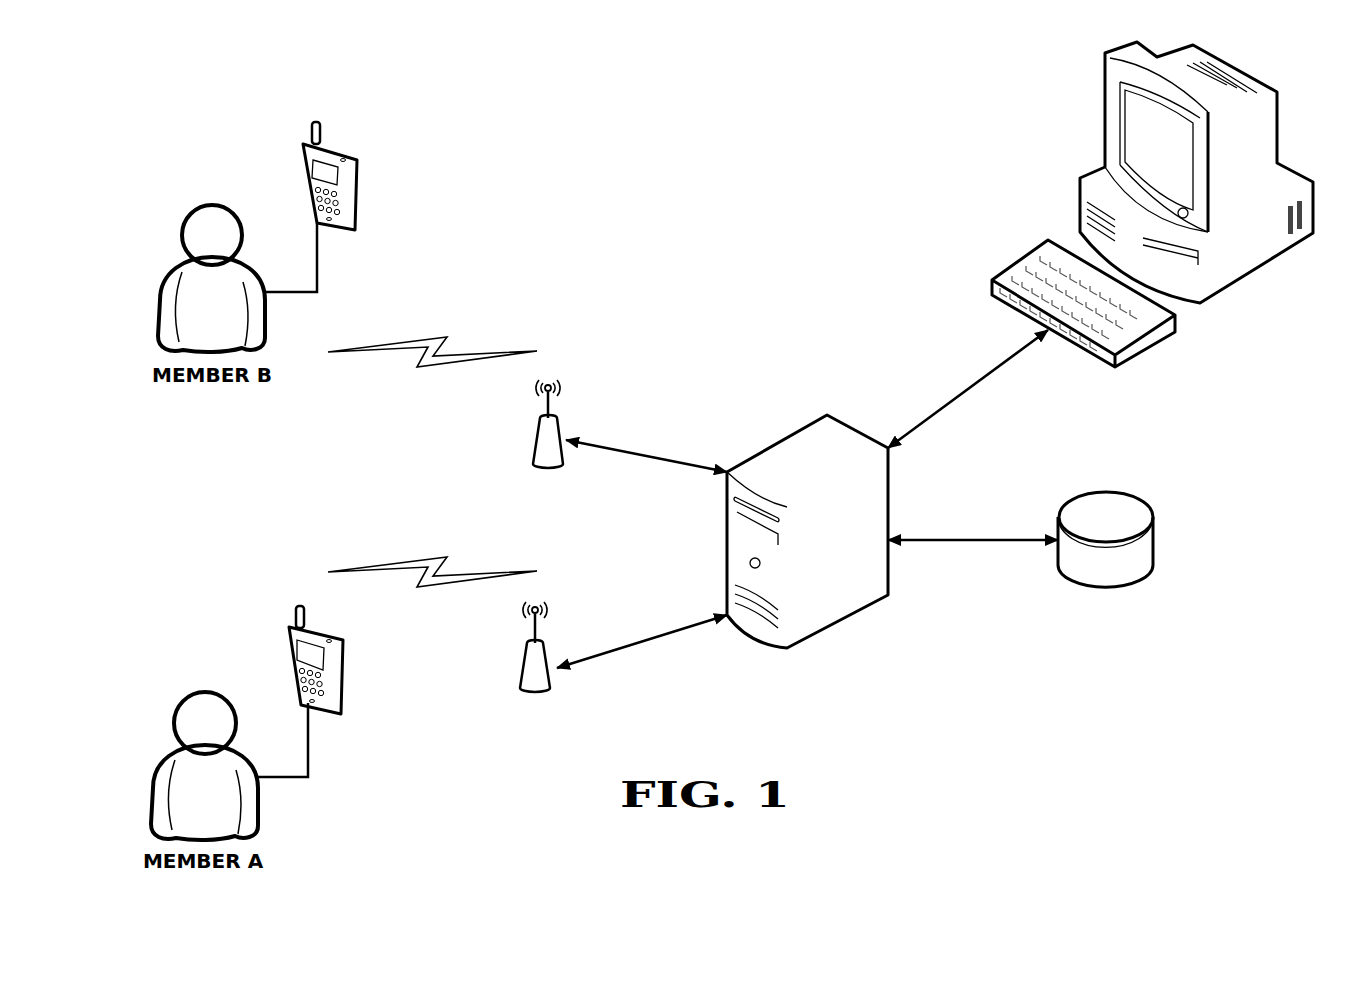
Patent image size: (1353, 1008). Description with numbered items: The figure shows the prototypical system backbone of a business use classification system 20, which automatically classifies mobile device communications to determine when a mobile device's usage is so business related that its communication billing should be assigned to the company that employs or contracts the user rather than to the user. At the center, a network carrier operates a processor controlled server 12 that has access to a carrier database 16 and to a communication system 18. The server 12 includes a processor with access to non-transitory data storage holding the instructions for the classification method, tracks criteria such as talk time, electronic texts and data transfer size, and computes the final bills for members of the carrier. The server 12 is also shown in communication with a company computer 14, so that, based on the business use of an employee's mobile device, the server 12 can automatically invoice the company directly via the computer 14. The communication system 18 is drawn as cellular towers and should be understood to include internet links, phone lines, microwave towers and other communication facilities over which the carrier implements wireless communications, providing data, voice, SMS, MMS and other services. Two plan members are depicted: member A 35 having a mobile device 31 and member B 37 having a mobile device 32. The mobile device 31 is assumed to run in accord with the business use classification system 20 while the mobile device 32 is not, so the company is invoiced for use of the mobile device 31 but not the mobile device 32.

The server 12 is at (735, 540).
The company computer 14 is at (1115, 108).
The carrier database 16 is at (1123, 508).
The communication system 18 is at (553, 418).
The business use classification system 20 is at (577, 114).
The mobile device 31 is at (293, 648).
The mobile device 32 is at (307, 182).
The member A 35 is at (185, 720).
The member B 37 is at (190, 233).